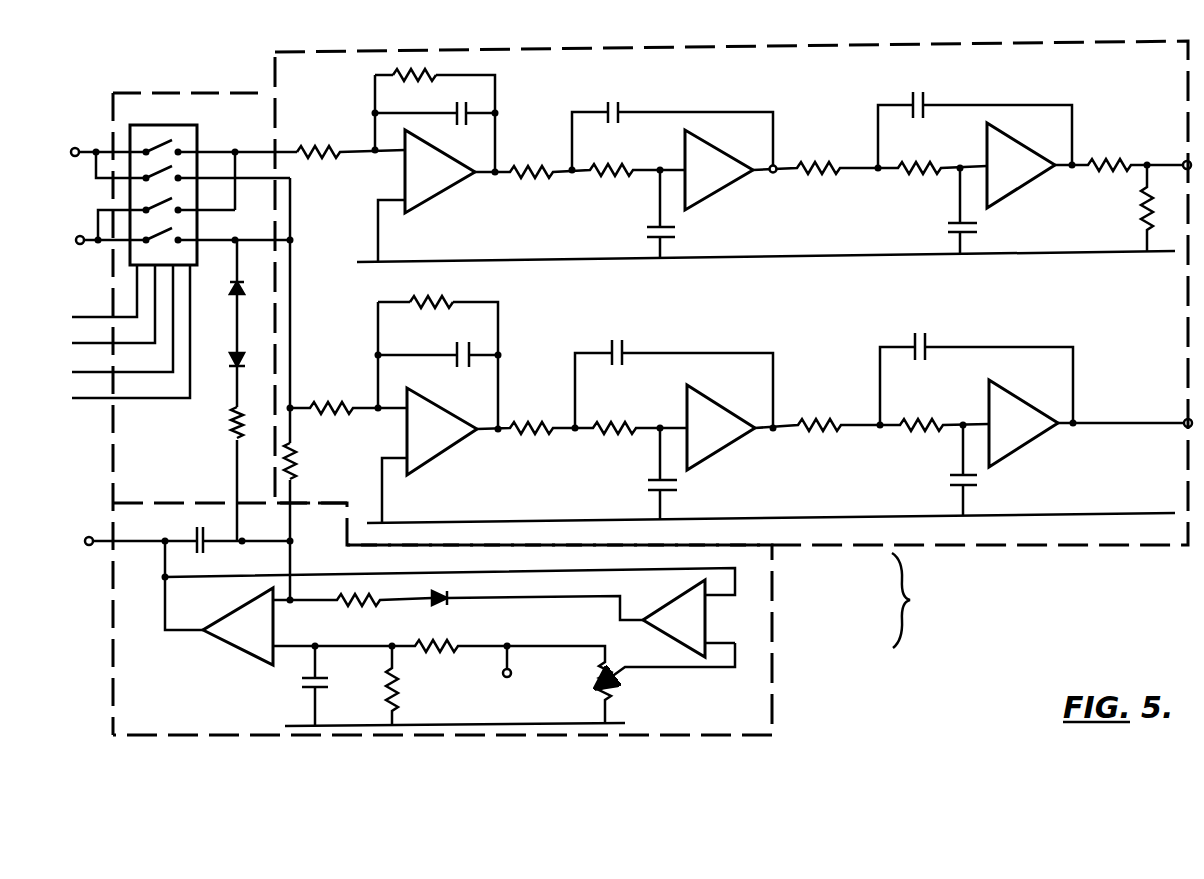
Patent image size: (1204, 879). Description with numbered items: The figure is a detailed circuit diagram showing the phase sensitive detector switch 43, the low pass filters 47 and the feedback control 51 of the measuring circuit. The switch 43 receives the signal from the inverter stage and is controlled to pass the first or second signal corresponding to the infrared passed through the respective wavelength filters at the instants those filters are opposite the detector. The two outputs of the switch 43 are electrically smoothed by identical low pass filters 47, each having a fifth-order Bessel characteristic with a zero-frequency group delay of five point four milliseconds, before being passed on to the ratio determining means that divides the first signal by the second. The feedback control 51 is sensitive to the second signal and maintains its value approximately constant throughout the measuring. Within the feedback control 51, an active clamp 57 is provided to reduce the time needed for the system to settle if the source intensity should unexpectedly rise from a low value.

The phase sensitive detector switch 43 is at (231, 88).
The low pass filters 47 is at (990, 79).
The feedback control 51 is at (778, 662).
The active clamp 57 is at (667, 607).